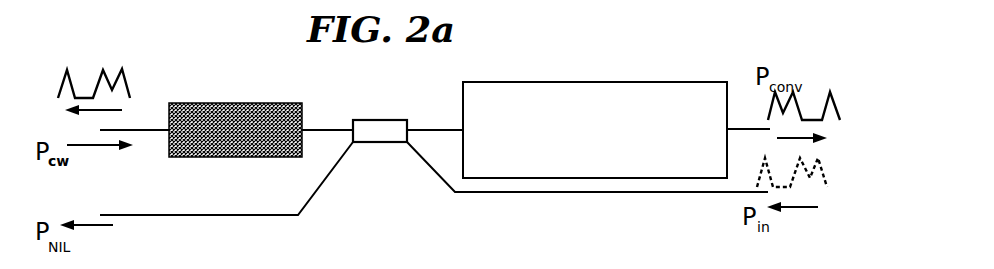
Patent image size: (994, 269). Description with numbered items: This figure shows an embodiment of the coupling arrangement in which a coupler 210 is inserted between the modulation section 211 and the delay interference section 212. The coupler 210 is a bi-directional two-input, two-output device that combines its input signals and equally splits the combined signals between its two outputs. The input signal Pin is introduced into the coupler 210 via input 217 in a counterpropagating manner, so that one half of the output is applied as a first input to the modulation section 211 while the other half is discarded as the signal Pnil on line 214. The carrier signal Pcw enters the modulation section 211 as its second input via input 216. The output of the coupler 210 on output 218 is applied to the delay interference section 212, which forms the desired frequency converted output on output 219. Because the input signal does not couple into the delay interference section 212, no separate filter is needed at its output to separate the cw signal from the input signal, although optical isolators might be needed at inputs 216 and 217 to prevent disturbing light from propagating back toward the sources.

The coupler 210 is at (372, 118).
The modulation section 211 is at (247, 103).
The delay interference section 212 is at (600, 81).
The line 214 is at (325, 175).
The input 216 is at (157, 127).
The input 217 is at (608, 197).
The output 218 is at (435, 127).
The output 219 is at (750, 125).